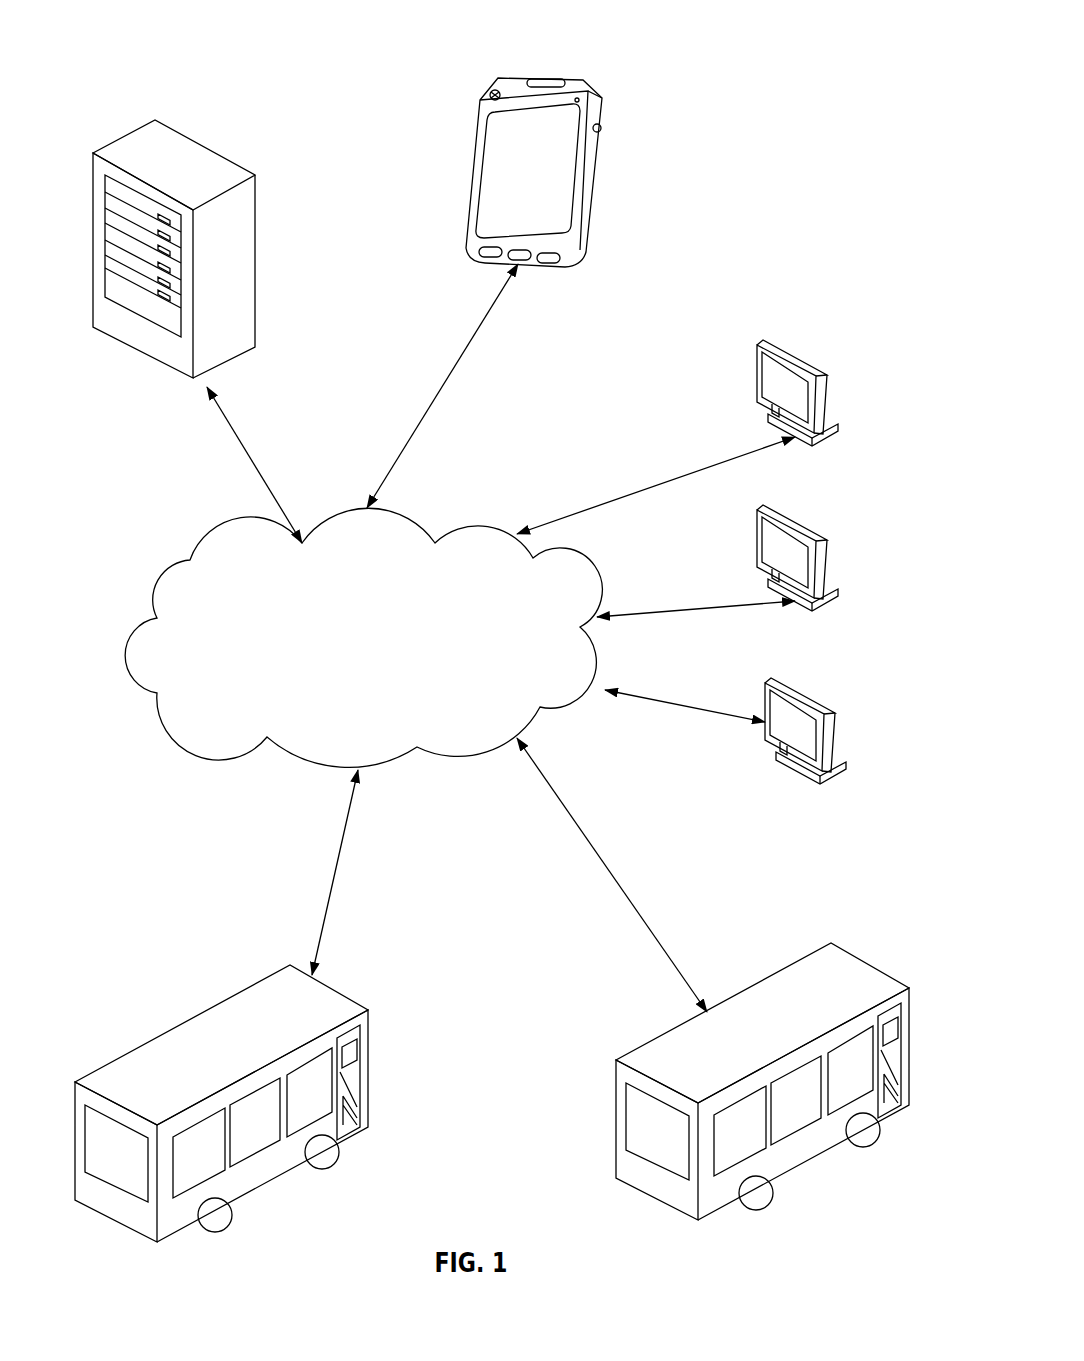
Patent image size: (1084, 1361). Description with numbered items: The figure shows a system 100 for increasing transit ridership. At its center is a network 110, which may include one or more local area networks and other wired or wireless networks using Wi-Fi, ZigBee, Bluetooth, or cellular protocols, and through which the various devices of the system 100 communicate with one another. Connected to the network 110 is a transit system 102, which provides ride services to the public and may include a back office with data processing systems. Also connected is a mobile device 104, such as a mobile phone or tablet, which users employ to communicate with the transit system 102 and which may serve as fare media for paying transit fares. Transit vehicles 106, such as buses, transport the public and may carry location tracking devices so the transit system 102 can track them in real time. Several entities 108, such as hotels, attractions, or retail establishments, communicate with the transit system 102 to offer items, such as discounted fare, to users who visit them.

The system 100 is at (873, 41).
The transit system 102 is at (255, 175).
The mobile device 104 is at (600, 160).
The transit vehicle 106 is at (368, 1008).
The entity 108 is at (838, 430).
The network 110 is at (350, 658).